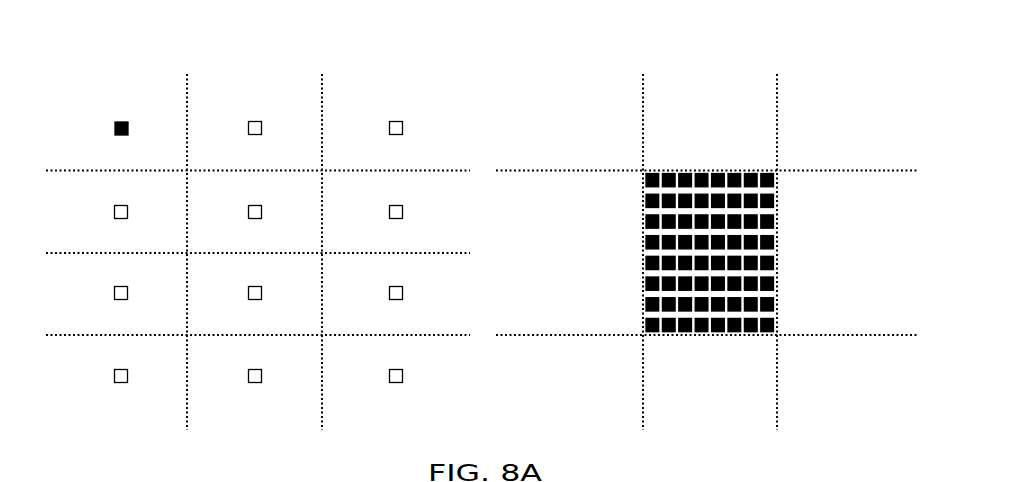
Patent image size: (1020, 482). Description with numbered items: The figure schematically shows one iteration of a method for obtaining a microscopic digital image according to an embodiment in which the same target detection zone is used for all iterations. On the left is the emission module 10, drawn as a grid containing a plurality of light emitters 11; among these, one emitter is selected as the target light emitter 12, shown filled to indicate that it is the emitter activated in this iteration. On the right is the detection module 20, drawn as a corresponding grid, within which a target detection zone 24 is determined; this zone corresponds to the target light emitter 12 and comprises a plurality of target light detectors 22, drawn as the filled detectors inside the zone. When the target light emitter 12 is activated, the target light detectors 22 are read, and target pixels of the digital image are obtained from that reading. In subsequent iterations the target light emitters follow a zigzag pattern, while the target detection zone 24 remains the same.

The emission module 10 is at (68, 85).
The light emitters 11 is at (255, 122).
The target light emitter 12 is at (122, 122).
The detection module 20 is at (848, 57).
The target light detectors 22 is at (646, 200).
The target detection zone 24 is at (675, 193).